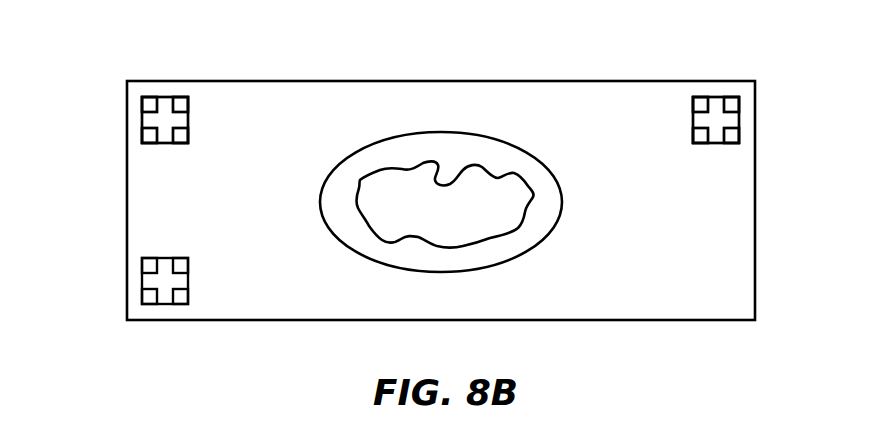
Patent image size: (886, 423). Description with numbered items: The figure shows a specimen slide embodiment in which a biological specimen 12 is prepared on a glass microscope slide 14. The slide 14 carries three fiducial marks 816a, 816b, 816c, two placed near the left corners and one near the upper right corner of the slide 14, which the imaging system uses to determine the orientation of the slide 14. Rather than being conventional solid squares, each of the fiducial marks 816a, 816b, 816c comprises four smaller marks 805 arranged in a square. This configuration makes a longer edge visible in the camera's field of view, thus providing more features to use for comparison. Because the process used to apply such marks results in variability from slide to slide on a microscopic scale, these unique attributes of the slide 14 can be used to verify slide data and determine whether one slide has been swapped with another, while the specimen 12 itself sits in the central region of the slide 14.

The biological specimen 12 is at (415, 187).
The glass microscope slide 14 is at (715, 290).
The smaller marks 805 is at (182, 105).
The fiducial mark 816a is at (141, 117).
The fiducial mark 816b is at (141, 280).
The fiducial mark 816c is at (742, 118).